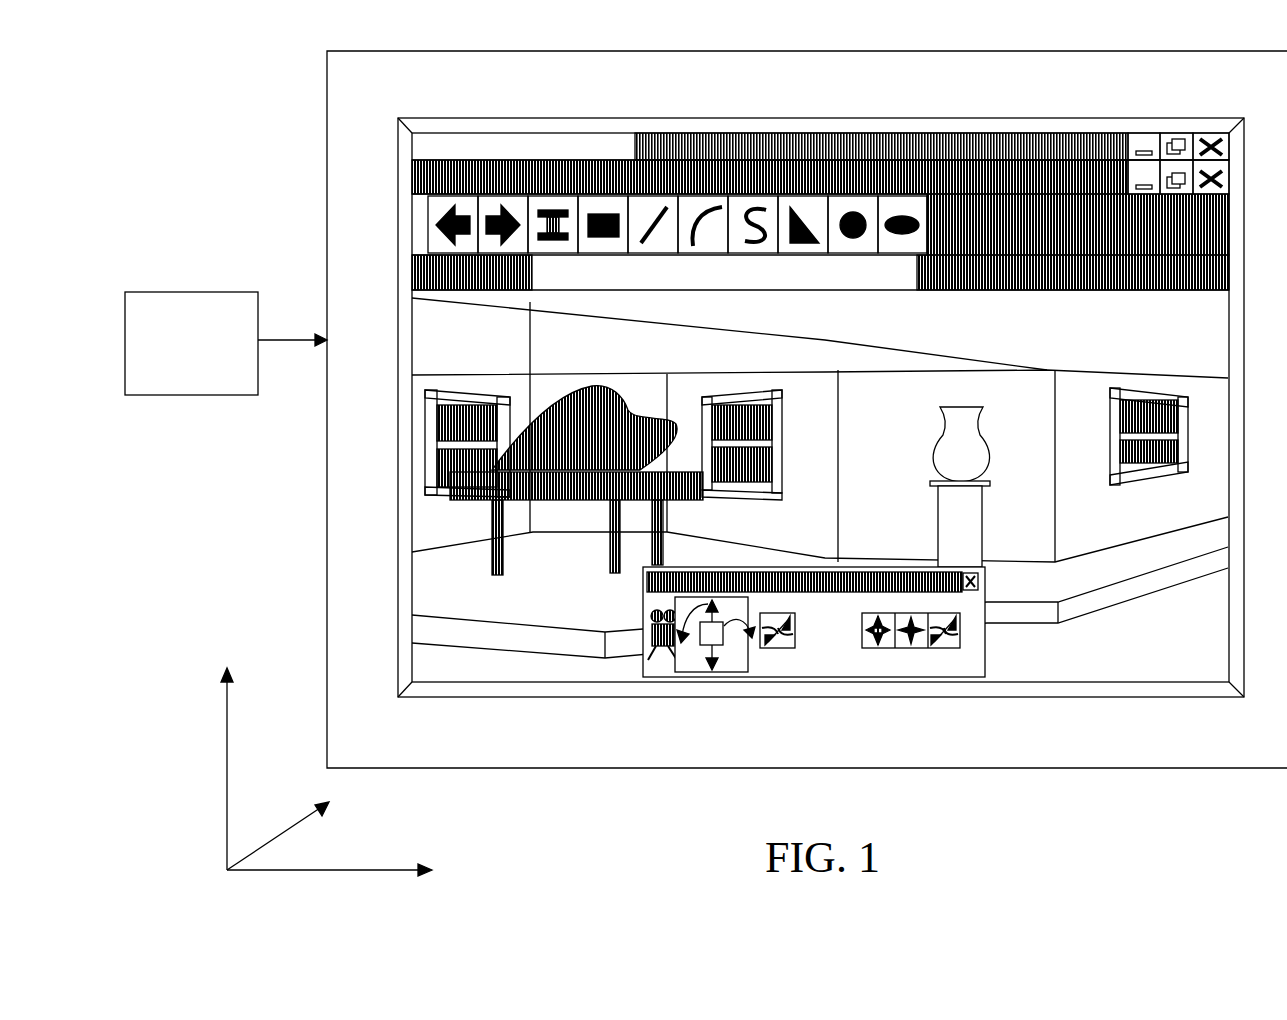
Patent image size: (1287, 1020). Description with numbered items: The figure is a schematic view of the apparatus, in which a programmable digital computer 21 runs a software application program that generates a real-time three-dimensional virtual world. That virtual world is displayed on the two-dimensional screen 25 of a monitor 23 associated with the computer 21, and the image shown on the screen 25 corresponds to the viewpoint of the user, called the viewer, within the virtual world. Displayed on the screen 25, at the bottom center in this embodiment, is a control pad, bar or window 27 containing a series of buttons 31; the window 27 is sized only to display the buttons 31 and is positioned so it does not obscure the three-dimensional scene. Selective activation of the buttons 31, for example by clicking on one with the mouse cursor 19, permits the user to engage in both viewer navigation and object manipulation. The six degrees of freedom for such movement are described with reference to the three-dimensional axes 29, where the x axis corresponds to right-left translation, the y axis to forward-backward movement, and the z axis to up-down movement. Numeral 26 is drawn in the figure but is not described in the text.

The mouse cursor 19 is at (688, 622).
The programmable digital computer 21 is at (226, 343).
The monitor 23 is at (338, 107).
The screen 25 is at (1145, 682).
The floor platform 26 is at (1210, 575).
The control window 27 is at (799, 657).
The three-dimensional axes 29 is at (271, 878).
The buttons 31 is at (785, 649).